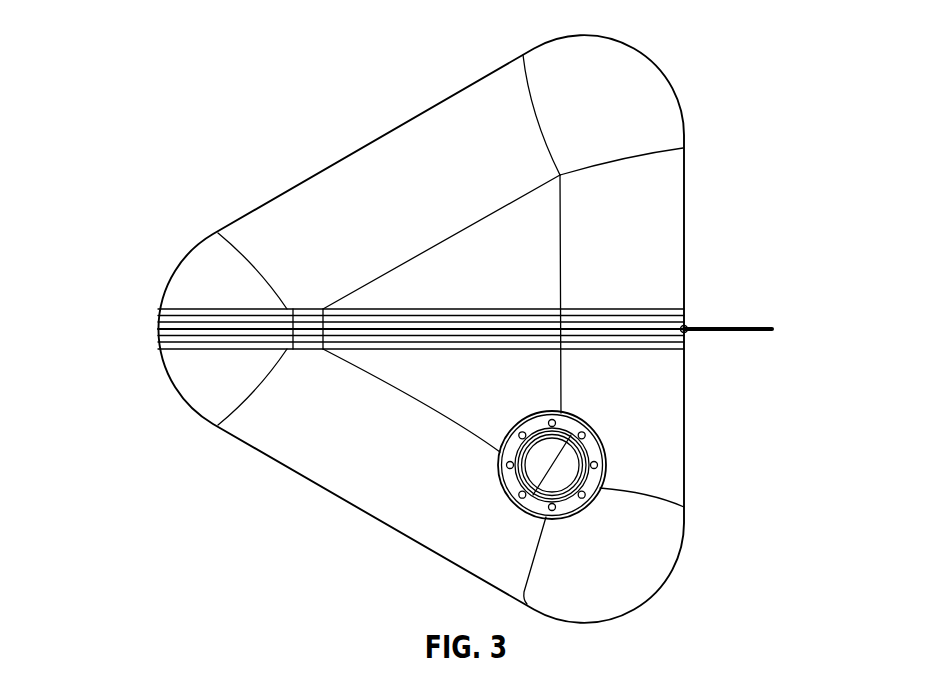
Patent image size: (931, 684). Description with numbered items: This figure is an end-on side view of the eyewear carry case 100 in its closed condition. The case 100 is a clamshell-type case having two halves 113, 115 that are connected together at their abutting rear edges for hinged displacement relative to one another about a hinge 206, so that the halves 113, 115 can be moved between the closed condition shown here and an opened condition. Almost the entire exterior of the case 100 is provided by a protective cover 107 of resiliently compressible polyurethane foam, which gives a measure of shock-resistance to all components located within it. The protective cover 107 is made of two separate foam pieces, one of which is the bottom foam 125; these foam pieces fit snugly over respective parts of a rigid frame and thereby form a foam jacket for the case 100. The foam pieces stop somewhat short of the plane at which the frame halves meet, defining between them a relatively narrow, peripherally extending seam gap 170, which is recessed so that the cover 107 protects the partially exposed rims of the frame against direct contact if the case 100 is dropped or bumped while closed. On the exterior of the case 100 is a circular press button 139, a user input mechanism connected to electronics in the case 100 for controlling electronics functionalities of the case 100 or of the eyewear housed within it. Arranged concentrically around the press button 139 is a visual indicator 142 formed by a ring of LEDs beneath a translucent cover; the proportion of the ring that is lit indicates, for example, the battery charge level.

The carry case 100 is at (368, 318).
The protective cover 107 is at (576, 389).
The half 113 is at (389, 210).
The half 115 is at (359, 439).
The bottom foam 125 is at (621, 101).
The press button 139 is at (577, 465).
The visual indicator 142 is at (558, 502).
The seam gap 170 is at (404, 292).
The hinge 206 is at (734, 306).